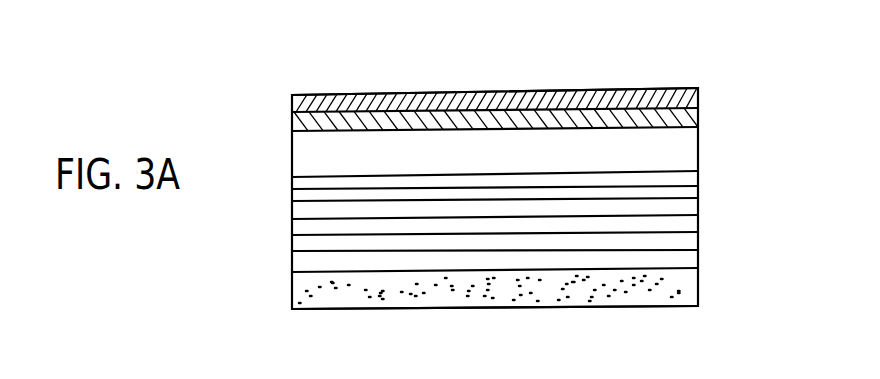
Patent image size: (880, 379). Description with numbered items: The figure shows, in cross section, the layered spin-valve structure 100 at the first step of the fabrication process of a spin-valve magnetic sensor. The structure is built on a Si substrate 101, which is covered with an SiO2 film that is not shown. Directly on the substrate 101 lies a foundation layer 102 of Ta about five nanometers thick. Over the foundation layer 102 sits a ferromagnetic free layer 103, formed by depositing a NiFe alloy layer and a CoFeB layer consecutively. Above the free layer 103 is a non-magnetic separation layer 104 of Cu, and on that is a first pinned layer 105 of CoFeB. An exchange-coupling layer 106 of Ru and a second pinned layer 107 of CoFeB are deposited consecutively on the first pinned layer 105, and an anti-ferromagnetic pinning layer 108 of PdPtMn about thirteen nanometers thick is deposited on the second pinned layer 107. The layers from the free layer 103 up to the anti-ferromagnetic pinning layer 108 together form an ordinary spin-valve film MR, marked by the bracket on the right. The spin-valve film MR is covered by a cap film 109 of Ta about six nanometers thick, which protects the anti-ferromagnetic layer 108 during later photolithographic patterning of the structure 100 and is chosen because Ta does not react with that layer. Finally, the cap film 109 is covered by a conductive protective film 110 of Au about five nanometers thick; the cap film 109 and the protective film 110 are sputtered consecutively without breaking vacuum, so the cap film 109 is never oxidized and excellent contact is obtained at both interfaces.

The spin-valve structure 100 is at (688, 49).
The Si substrate 101 is at (375, 302).
The foundation layer 102 is at (700, 258).
The ferromagnetic free layer 103 is at (299, 246).
The non-magnetic separation layer 104 is at (700, 222).
The first pinned layer 105 is at (302, 211).
The exchange-coupling layer 106 is at (700, 188).
The second pinned layer 107 is at (292, 178).
The anti-ferromagnetic pinning layer 108 is at (700, 150).
The cap film 109 is at (292, 118).
The conductive protective film 110 is at (700, 97).
The spin-valve film MR is at (787, 123).